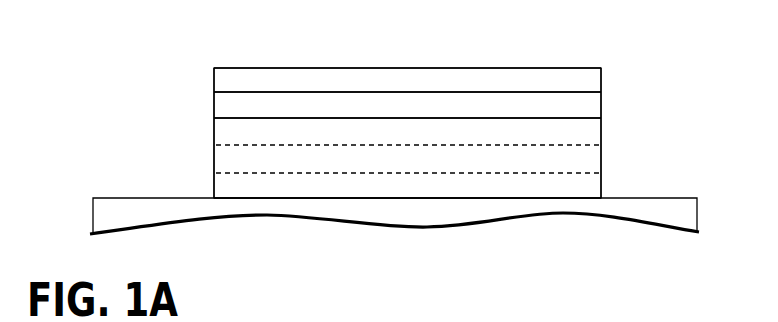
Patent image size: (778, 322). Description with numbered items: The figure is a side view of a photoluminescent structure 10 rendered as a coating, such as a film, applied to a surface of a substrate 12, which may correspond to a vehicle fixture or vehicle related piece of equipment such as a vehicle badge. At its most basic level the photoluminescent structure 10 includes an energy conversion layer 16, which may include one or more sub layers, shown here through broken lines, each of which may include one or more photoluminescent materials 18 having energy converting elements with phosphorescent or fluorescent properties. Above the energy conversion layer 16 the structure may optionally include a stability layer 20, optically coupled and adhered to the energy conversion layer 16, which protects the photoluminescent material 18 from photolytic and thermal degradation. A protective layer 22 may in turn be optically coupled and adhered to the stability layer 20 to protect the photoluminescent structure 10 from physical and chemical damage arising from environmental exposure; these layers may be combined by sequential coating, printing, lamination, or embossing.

The photoluminescent structure 10 is at (543, 43).
The substrate 12 is at (644, 198).
The energy conversion layer 16 is at (214, 157).
The photoluminescent material 18 is at (532, 154).
The stability layer 20 is at (214, 103).
The protective layer 22 is at (300, 68).